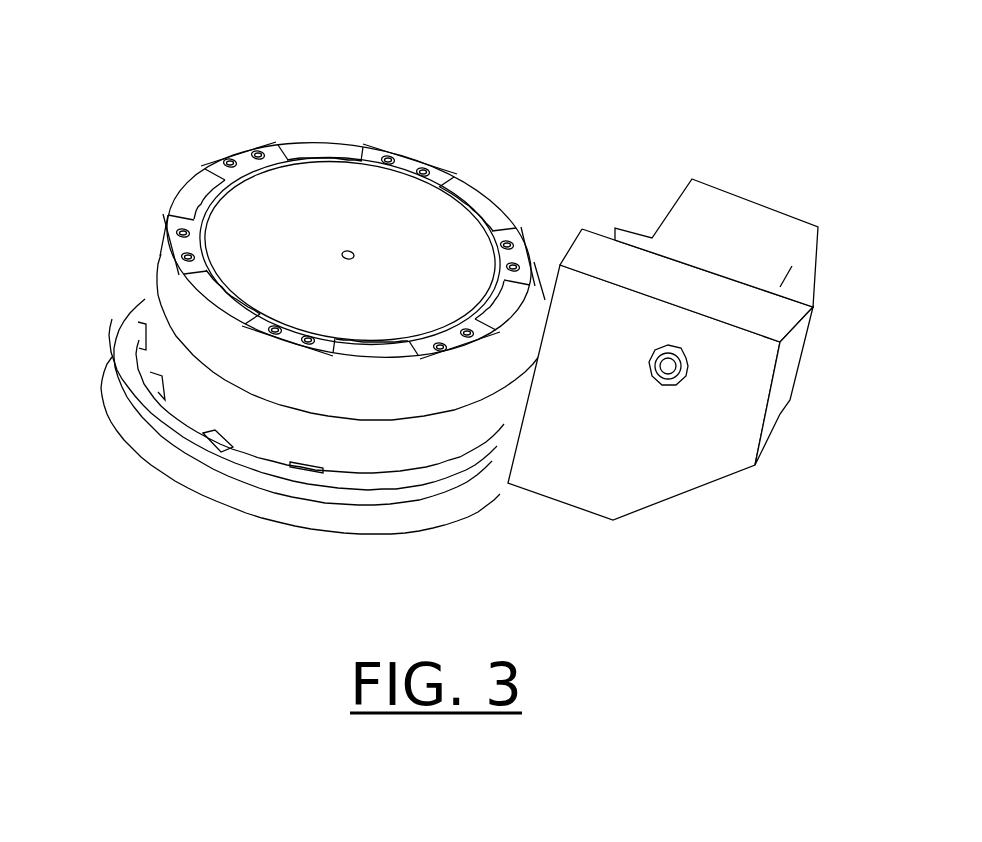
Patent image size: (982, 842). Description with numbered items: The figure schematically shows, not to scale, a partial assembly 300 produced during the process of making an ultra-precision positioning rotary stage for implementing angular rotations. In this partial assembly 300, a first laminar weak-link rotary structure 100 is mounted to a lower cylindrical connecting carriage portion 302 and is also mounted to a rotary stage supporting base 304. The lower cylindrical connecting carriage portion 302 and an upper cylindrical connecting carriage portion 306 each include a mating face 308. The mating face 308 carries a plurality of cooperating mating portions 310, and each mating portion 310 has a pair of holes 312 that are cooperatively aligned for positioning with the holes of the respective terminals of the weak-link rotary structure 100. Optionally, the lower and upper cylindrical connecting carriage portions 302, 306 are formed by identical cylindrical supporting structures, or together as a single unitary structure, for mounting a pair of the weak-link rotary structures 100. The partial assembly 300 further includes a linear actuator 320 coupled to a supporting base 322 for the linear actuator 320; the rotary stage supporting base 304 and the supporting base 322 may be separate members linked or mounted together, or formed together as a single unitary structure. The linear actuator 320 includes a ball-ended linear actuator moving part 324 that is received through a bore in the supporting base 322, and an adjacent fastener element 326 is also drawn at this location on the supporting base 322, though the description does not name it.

The laminar weak-link rotary structure 100 is at (133, 343).
The partial assembly 300 is at (383, 34).
The lower cylindrical connecting carriage portion 302 is at (158, 327).
The rotary stage supporting base 304 is at (131, 422).
The upper cylindrical connecting carriage portion 306 is at (156, 262).
The mating face 308 is at (484, 190).
The cooperating mating portions 310 is at (239, 152).
The holes 312 is at (390, 158).
The linear actuator 320 is at (706, 229).
The supporting base 322 is at (537, 468).
The ball-ended linear actuator moving part 324 is at (665, 368).
The nut 326 is at (688, 361).